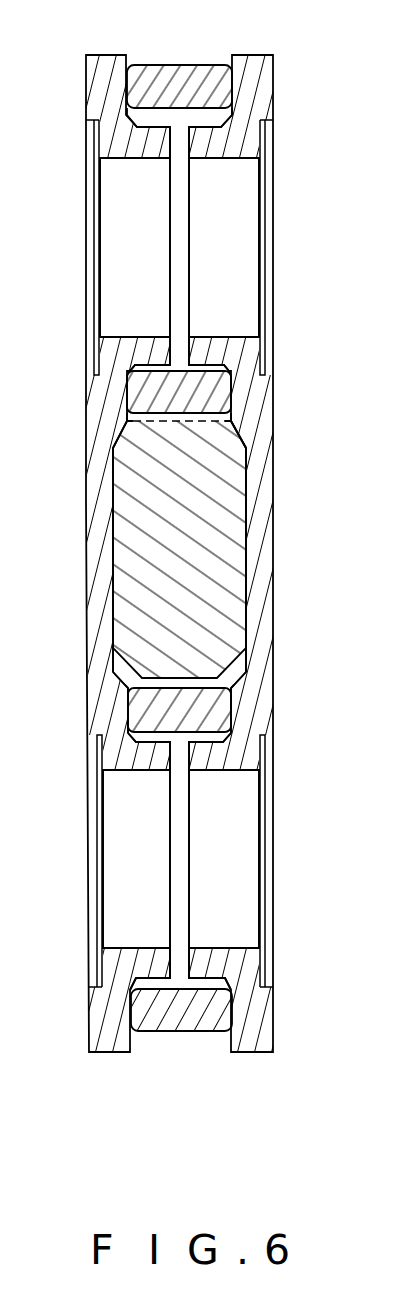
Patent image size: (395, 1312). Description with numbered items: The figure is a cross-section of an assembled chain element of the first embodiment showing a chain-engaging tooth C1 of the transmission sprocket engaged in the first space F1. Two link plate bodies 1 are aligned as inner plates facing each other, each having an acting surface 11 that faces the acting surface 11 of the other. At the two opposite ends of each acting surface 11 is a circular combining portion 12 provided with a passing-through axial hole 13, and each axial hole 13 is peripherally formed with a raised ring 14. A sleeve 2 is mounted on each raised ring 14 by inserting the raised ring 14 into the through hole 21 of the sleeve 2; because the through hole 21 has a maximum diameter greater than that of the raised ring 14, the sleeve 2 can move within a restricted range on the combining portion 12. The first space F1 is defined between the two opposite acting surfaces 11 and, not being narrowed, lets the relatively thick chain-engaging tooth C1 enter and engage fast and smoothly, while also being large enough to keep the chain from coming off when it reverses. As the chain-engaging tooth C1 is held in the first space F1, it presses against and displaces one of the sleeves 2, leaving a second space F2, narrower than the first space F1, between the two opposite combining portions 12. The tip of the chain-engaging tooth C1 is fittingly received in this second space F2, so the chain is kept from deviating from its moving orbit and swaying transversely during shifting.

The link plate body 1 is at (90, 379).
The acting surface 11 is at (252, 501).
The combining portion 12 is at (128, 709).
The axial hole 13 is at (126, 230).
The raised ring 14 is at (148, 143).
The sleeve 2 is at (188, 78).
The through hole 21 is at (220, 118).
The chain-engaging tooth C1 is at (158, 544).
The first space F1 is at (240, 436).
The second space F2 is at (131, 413).